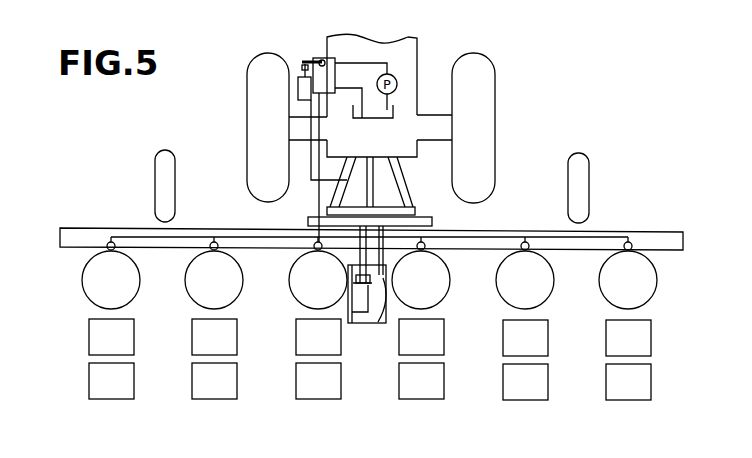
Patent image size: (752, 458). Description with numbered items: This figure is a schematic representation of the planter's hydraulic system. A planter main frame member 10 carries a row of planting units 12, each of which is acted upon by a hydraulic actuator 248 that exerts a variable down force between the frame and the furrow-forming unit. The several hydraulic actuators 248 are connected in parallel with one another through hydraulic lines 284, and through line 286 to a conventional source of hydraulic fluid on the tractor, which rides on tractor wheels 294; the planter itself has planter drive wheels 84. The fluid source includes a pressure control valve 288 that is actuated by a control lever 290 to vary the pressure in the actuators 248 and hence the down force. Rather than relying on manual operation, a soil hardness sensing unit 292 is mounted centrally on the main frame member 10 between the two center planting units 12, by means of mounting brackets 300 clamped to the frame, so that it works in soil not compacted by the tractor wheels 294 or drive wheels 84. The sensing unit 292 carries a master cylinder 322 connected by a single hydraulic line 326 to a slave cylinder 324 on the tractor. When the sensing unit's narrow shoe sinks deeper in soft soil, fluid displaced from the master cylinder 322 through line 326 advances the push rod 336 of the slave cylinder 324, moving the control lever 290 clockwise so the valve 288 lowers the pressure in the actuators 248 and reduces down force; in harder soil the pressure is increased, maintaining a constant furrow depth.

The main frame member 10 is at (76, 235).
The planting units 12 is at (137, 400).
The planter drive wheels 84 is at (157, 169).
The hydraulic actuator 248 is at (112, 250).
The hydraulic lines 284 is at (198, 236).
The hydraulic line 286 is at (318, 208).
The pressure control valve 288 is at (333, 58).
The control lever 290 is at (321, 61).
The soil hardness sensing unit 292 is at (358, 327).
The tractor wheels 294 is at (248, 124).
The upper mounting brackets 300 is at (535, 453).
The master cylinder 322 is at (373, 293).
The slave cylinder 324 is at (300, 87).
The hydraulic line 326 is at (310, 160).
The push rod 336 is at (304, 67).